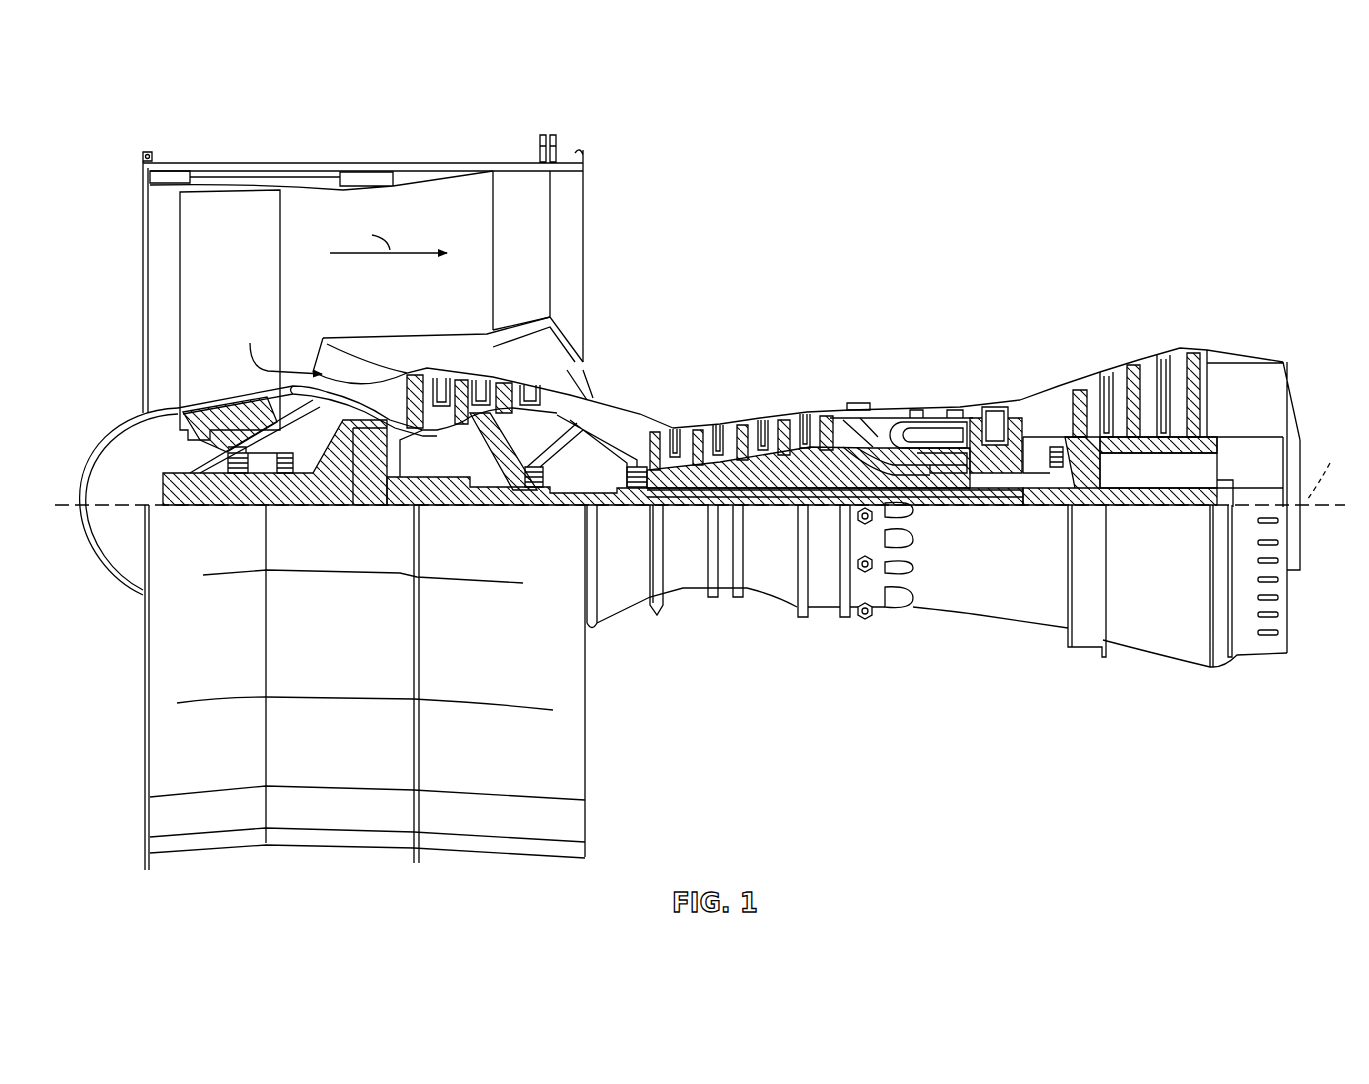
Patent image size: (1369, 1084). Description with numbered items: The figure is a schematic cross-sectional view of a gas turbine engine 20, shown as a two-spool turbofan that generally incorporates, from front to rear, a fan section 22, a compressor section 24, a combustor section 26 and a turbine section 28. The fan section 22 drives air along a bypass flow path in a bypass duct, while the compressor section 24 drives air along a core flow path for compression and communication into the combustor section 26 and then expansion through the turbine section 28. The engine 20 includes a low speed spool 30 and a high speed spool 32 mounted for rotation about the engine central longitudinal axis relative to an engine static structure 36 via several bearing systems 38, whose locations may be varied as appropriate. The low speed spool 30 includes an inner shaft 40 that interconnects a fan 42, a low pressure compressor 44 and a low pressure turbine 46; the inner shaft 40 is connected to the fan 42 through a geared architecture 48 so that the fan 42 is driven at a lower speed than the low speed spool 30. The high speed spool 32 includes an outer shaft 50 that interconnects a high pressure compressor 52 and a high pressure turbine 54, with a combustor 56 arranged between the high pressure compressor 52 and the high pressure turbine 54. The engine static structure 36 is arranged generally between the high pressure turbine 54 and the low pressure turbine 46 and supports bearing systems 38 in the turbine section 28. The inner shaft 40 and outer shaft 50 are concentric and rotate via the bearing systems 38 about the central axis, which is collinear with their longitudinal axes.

The gas turbine engine 20 is at (1118, 200).
The fan section 22 is at (243, 150).
The compressor section 24 is at (763, 370).
The combustor section 26 is at (917, 370).
The turbine section 28 is at (1053, 353).
The low speed spool 30 is at (792, 507).
The high speed spool 32 is at (837, 460).
The engine static structure 36 is at (828, 615).
The bearing systems 38 is at (240, 467).
The inner shaft 40 is at (597, 507).
The fan 42 is at (254, 282).
The low pressure compressor 44 is at (503, 392).
The low pressure turbine 46 is at (1150, 373).
The geared architecture 48 is at (367, 473).
The outer shaft 50 is at (940, 480).
The high pressure compressor 52 is at (753, 477).
The high pressure turbine 54 is at (998, 407).
The combustor 56 is at (923, 427).